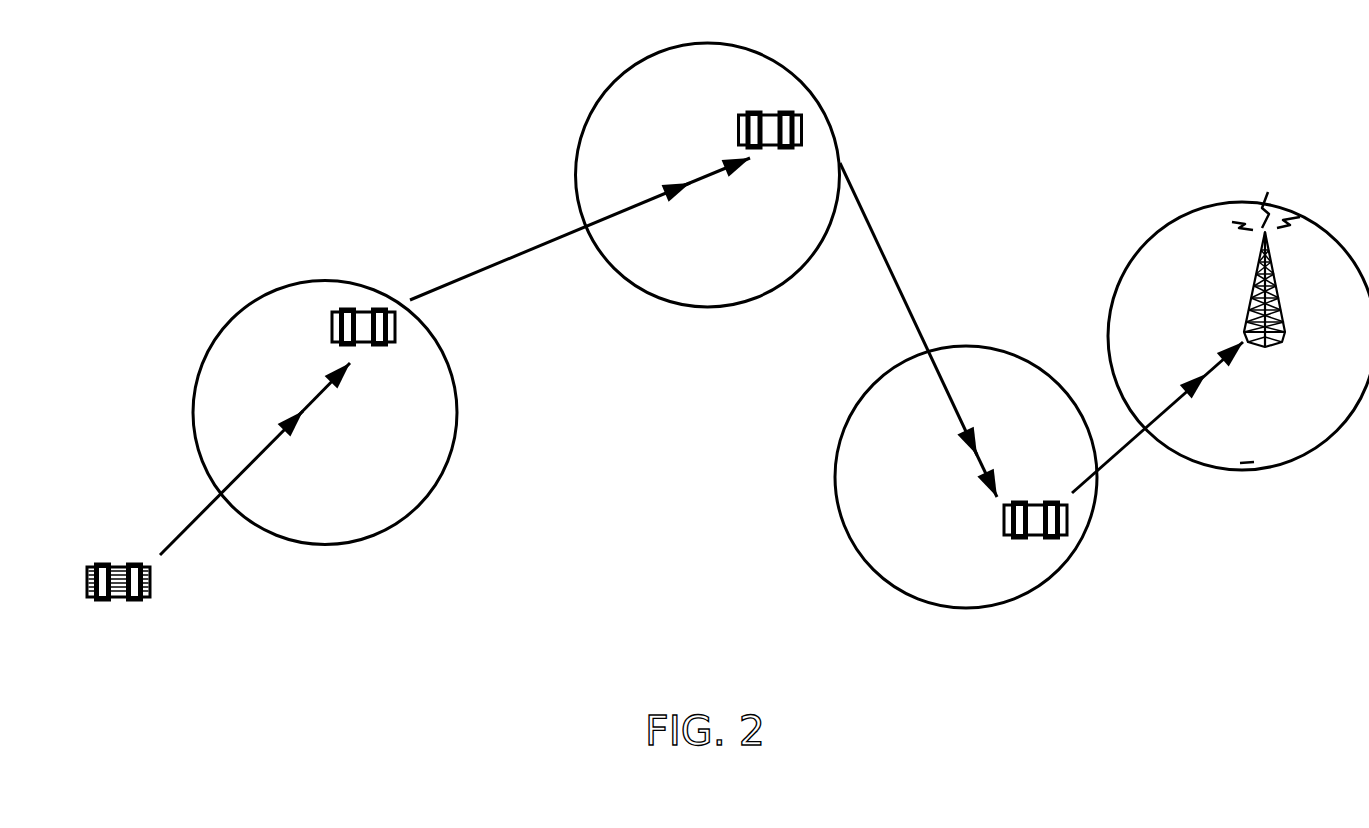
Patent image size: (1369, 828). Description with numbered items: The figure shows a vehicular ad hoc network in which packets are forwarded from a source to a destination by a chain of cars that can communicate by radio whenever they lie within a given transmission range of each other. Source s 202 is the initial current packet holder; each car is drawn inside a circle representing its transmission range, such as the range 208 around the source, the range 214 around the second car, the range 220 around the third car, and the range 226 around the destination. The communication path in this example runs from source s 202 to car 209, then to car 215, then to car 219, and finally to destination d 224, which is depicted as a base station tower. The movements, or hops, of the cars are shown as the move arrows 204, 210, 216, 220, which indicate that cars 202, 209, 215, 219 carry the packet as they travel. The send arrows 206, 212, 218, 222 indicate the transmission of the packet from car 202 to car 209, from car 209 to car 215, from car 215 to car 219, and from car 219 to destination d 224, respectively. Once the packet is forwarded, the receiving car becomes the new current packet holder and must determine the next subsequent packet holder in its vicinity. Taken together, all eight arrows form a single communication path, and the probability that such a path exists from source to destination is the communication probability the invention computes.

The source s 202 is at (152, 590).
The arrow indicating hop of car 202 204 is at (195, 520).
The arrow indicating packet transmission from car 202 to car 209 206 is at (318, 397).
The transmission range 208 is at (193, 405).
The car 209 is at (385, 343).
The arrow indicating hop of car 209 210 is at (502, 260).
The arrow indicating packet transmission from car 209 to car 215 212 is at (712, 170).
The transmission range of first relay vehicle 214 is at (637, 63).
The car 215 is at (773, 113).
The arrow indicating hop of car 215 216 is at (857, 193).
The arrow indicating packet transmission from car 215 to car 219 218 is at (974, 464).
The car 219 is at (1041, 536).
The arrow indicating hop of car 219 220 is at (842, 430).
The arrow indicating packet transmission from car 219 to destination d 222 is at (1210, 377).
The destination d 224 is at (1253, 288).
The transmission range of destination 226 is at (1137, 248).